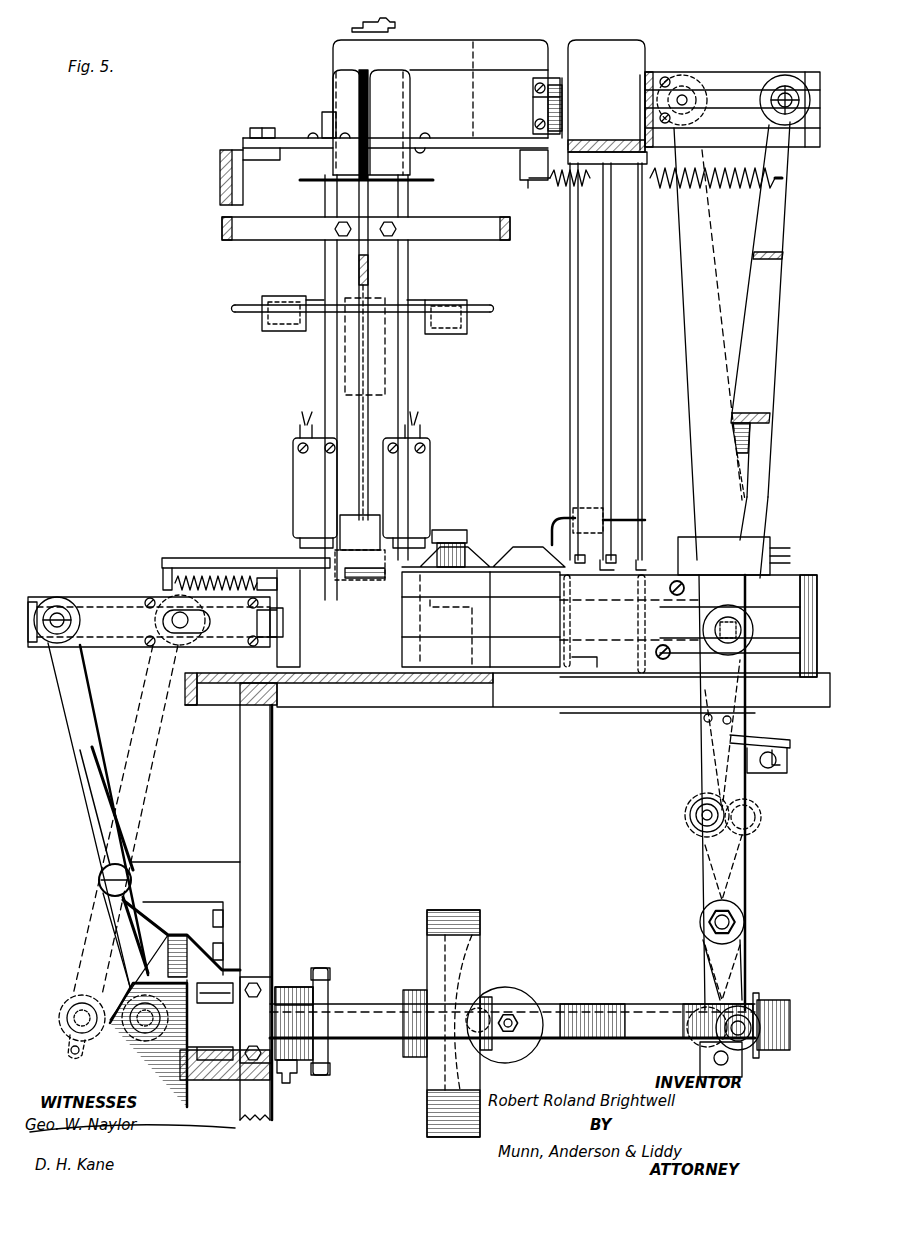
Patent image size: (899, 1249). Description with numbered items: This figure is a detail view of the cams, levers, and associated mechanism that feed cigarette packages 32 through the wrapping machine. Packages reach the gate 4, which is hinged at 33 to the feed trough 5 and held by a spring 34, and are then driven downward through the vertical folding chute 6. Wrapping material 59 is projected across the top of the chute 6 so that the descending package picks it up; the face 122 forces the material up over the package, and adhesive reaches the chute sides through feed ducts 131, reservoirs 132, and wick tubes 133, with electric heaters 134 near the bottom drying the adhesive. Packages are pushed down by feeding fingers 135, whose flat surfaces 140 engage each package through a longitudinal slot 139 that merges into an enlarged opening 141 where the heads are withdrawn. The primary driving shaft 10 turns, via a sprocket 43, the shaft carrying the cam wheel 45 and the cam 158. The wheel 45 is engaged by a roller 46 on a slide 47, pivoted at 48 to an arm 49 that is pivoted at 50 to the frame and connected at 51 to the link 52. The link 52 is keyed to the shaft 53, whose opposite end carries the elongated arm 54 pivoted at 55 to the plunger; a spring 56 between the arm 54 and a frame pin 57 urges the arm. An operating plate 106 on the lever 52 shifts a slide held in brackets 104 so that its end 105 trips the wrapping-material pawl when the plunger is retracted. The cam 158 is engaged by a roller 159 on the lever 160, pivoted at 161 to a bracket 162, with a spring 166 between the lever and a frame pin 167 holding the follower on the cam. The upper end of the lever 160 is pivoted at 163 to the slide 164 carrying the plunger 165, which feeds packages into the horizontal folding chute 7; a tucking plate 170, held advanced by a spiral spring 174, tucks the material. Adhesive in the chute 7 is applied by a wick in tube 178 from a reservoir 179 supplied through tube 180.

The gate 4 is at (628, 78).
The feed trough 5 is at (500, 75).
The vertical folding chute 6 is at (333, 358).
The folding chute 7 is at (501, 580).
The shaft 10 is at (229, 1014).
The cigarette packages 32 is at (462, 52).
The hinge 33 is at (553, 78).
The spring 34 is at (560, 105).
The sprocket 43 is at (327, 1050).
The wheel 45 is at (438, 935).
The follower or roller 46 is at (512, 998).
The slide 47 is at (598, 1015).
The pivotal connection 48 is at (748, 1045).
The arm 49 is at (742, 985).
The pivot 50 is at (744, 921).
The pivotal connection 51 is at (690, 814).
The arm or link 52 is at (702, 752).
The shaft 53 is at (742, 631).
The elongated arm 54 is at (772, 318).
The pivot 55 is at (786, 92).
The spring 56 is at (670, 180).
The pin 57 is at (732, 65).
The wrapping material 59 is at (318, 178).
The brackets 104 is at (778, 768).
The slide end 105 is at (779, 758).
The operating plate 106 is at (770, 740).
The face 122 is at (387, 358).
The feed ducts 131 is at (248, 305).
The reservoirs 132 is at (280, 302).
The tubes 133 is at (313, 304).
The electric heaters 134 is at (300, 470).
The feeding plungers or fingers 135 is at (383, 22).
The slot 139 is at (360, 415).
The flat surface 140 is at (388, 30).
The enlarged opening 141 is at (340, 518).
The cam 158 is at (167, 1021).
The follower or roller 159 is at (88, 1040).
The lever 160 is at (72, 722).
The pivot 161 is at (100, 880).
The bracket 162 is at (180, 872).
The pivot 163 is at (57, 605).
The slide 164 is at (120, 618).
The plunger 165 is at (286, 586).
The spring 166 is at (225, 1071).
The pin 167 is at (292, 1080).
The tucking plate 170 is at (220, 560).
The spiral spring 174 is at (197, 580).
The tube 178 is at (560, 525).
The reservoir 179 is at (582, 508).
The tube 180 is at (645, 518).